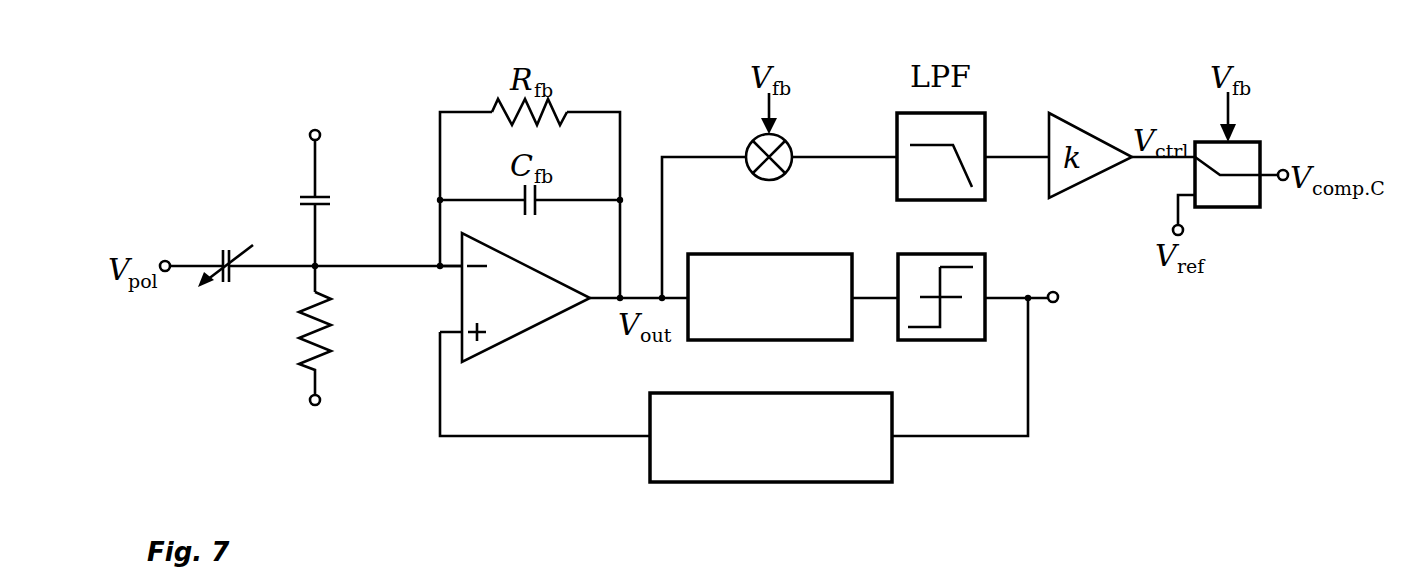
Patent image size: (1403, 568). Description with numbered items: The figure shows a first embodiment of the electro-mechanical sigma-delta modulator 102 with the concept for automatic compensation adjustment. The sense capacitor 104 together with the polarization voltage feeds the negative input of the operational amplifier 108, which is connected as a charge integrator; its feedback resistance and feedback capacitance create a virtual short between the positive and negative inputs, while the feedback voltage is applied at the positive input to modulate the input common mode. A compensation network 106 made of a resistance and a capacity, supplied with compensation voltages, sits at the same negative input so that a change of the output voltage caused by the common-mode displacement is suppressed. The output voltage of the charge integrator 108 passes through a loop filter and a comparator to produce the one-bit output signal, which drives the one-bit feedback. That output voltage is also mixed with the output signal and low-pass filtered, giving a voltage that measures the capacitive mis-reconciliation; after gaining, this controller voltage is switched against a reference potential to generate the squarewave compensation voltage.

The electro-mechanical sigma-delta modulator 102 is at (1100, 418).
The sense capacitor 104 is at (223, 245).
The compensation network 106 is at (343, 271).
The operational amplifier 108 is at (525, 332).